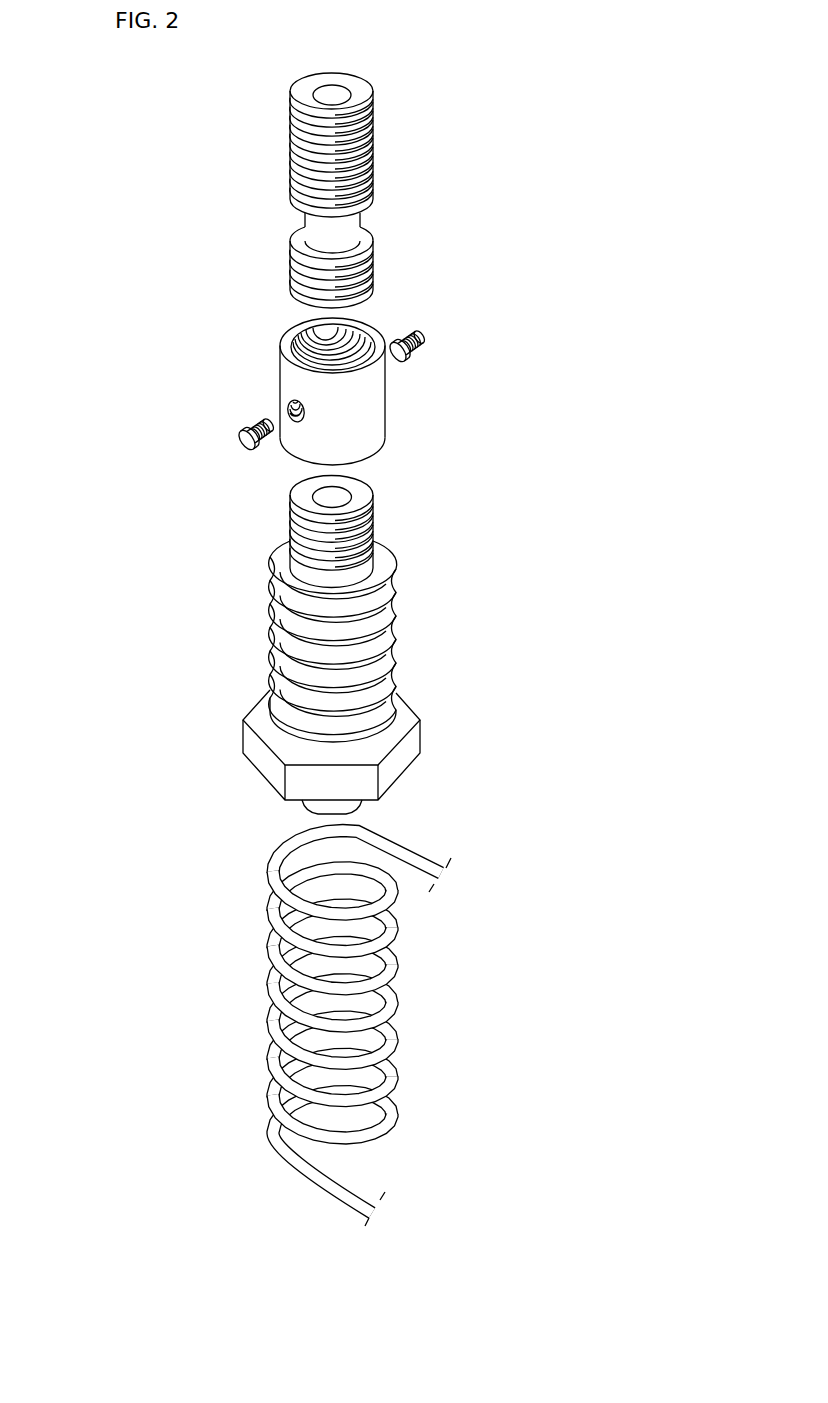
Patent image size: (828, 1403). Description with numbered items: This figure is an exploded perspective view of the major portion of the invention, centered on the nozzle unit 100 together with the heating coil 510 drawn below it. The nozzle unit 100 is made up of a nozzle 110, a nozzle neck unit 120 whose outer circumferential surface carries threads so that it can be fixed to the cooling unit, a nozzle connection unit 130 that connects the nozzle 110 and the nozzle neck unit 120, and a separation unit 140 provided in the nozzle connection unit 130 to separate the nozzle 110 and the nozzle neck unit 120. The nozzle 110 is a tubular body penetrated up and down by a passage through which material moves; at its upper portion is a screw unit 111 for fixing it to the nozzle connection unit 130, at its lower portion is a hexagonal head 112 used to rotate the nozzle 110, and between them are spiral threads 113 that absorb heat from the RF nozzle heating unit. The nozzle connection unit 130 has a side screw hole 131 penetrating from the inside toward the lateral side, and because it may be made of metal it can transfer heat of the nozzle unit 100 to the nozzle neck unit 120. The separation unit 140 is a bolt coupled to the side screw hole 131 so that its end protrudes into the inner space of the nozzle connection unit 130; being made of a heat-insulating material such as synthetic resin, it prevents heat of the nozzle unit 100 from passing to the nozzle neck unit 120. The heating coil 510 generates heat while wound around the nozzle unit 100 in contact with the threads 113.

The nozzle unit 100 is at (527, 73).
The nozzle 110 is at (368, 568).
The screw unit 111 is at (373, 532).
The hexagonal head 112 is at (411, 742).
The threads 113 is at (387, 620).
The nozzle neck unit 120 is at (373, 138).
The nozzle connection unit 130 is at (370, 401).
The side screw hole 131 is at (287, 408).
The separation unit 140 is at (428, 345).
The heating coil 510 is at (388, 1003).